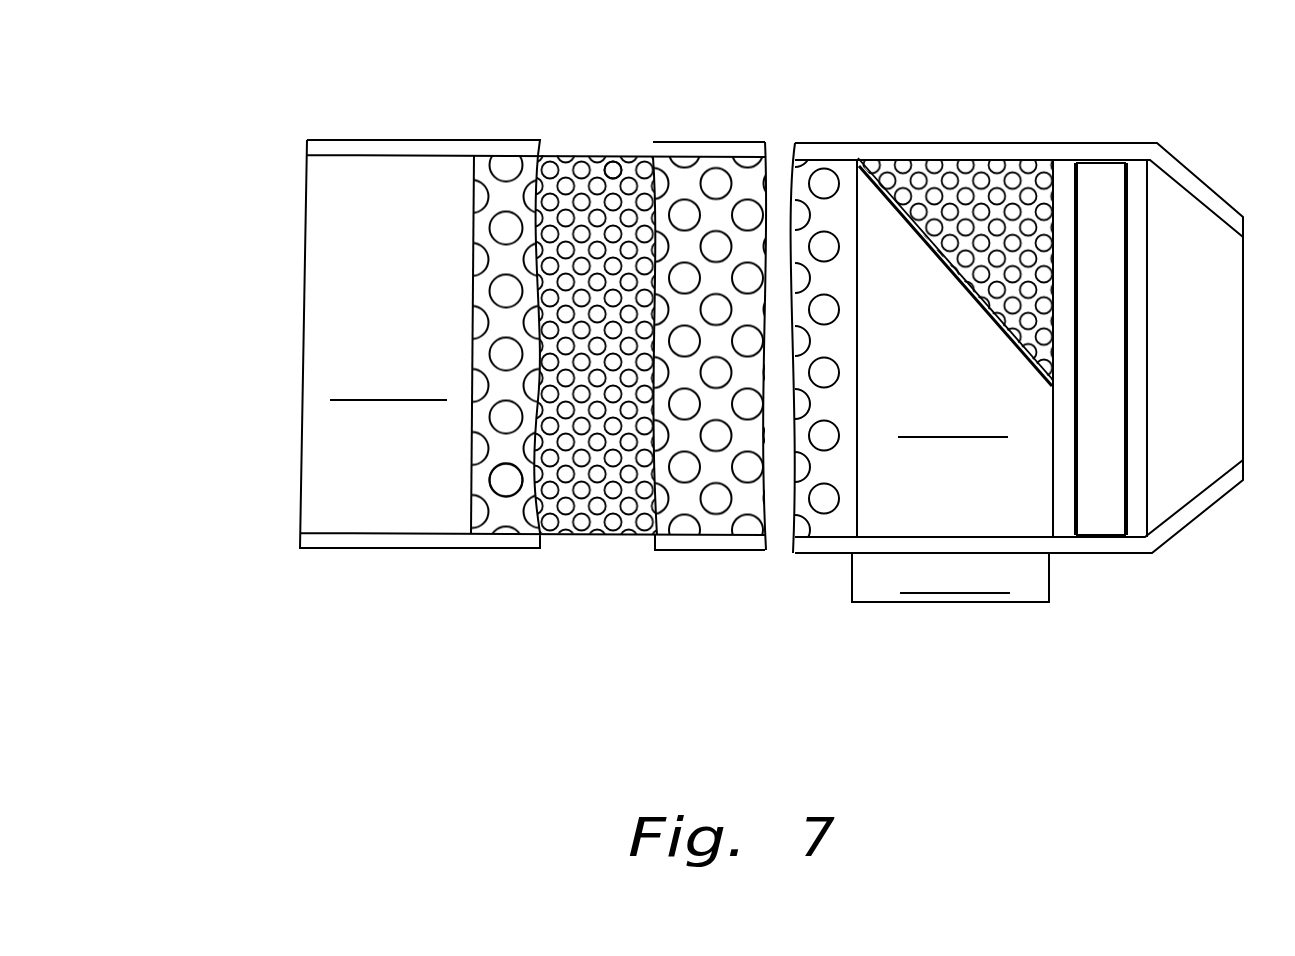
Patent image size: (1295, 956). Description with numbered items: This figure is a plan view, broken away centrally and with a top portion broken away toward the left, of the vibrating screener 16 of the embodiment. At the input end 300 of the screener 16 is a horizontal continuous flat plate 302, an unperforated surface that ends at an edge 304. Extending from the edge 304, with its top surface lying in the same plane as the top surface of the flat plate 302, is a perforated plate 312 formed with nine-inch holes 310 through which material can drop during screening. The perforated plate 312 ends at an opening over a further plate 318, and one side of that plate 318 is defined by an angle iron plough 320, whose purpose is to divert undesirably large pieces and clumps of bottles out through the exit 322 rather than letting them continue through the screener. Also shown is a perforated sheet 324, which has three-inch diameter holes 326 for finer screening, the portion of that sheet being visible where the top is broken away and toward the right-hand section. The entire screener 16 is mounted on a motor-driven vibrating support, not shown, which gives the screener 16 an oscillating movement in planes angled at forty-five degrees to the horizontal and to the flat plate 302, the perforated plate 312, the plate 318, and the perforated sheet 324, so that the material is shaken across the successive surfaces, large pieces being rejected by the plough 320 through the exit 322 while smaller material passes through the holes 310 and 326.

The vibrating screener 16 is at (324, 706).
The input end 300 is at (300, 446).
The horizontal continuous flat plate 302 is at (402, 344).
The edge 304 is at (468, 443).
The nine-inch holes 310 is at (500, 472).
The perforated plate 312 is at (703, 515).
The plate 318 is at (960, 348).
The angle iron plough 320 is at (868, 160).
The exit 322 is at (950, 572).
The perforated sheet 324 is at (560, 535).
The three-inch diameter holes 326 is at (613, 168).